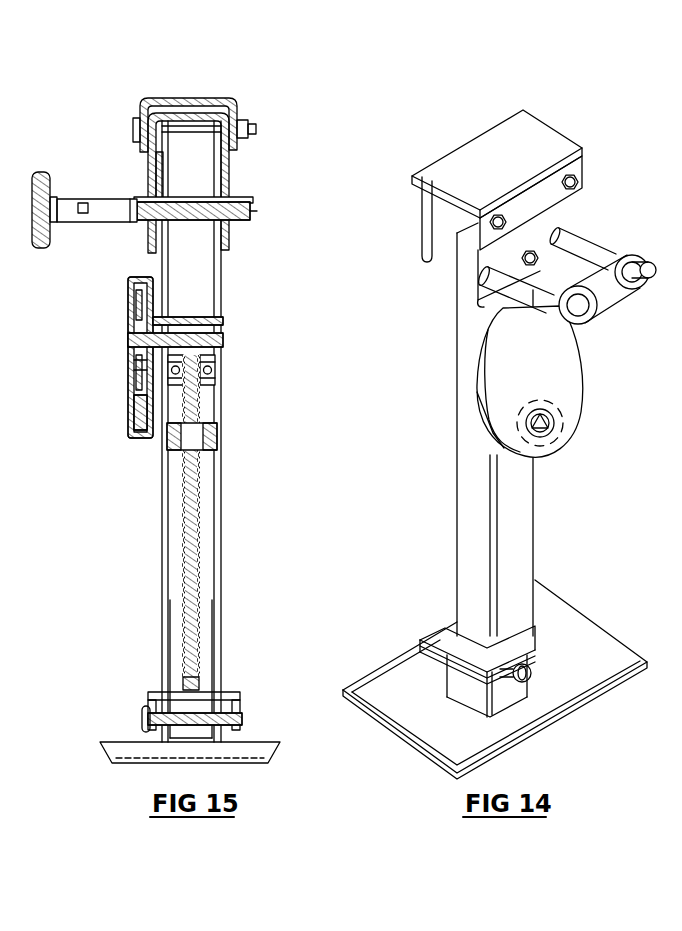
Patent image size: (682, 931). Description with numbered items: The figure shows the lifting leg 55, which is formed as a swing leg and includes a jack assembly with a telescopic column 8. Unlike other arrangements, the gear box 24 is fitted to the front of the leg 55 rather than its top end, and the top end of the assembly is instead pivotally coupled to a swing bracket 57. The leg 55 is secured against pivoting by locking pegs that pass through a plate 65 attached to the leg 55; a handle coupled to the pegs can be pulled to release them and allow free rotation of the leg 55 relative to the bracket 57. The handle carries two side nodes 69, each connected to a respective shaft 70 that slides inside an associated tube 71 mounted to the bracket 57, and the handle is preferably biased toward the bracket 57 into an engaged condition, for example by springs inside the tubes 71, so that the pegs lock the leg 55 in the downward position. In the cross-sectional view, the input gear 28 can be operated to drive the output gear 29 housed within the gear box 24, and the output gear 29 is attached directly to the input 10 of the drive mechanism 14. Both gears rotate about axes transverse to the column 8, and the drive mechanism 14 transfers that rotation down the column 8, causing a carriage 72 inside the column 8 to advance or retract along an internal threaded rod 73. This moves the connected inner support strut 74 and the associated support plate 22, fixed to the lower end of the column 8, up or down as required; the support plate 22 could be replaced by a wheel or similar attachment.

In FIG. 15, the telescopic column 8 is at (160, 567).
In FIG. 14, the telescopic column 8 is at (530, 616).
In FIG. 15, the input 10 is at (130, 347).
In FIG. 15, the drive mechanism 14 is at (217, 377).
In FIG. 15, the support plate 22 is at (258, 747).
In FIG. 15, the gear box 24 is at (130, 307).
In FIG. 14, the gear box 24 is at (560, 433).
In FIG. 15, the input gear 28 is at (137, 405).
In FIG. 15, the output gear 29 is at (130, 339).
In FIG. 14, the lifting leg 55 is at (537, 548).
In FIG. 14, the swing bracket 57 is at (460, 140).
In FIG. 14, the plate 65 is at (480, 302).
In FIG. 14, the side nodes 69 is at (573, 327).
In FIG. 14, the shaft 70 is at (535, 247).
In FIG. 14, the tube 71 is at (597, 243).
In FIG. 15, the carriage 72 is at (220, 438).
In FIG. 15, the internal threaded rod 73 is at (200, 547).
In FIG. 15, the inner support strut 74 is at (202, 690).